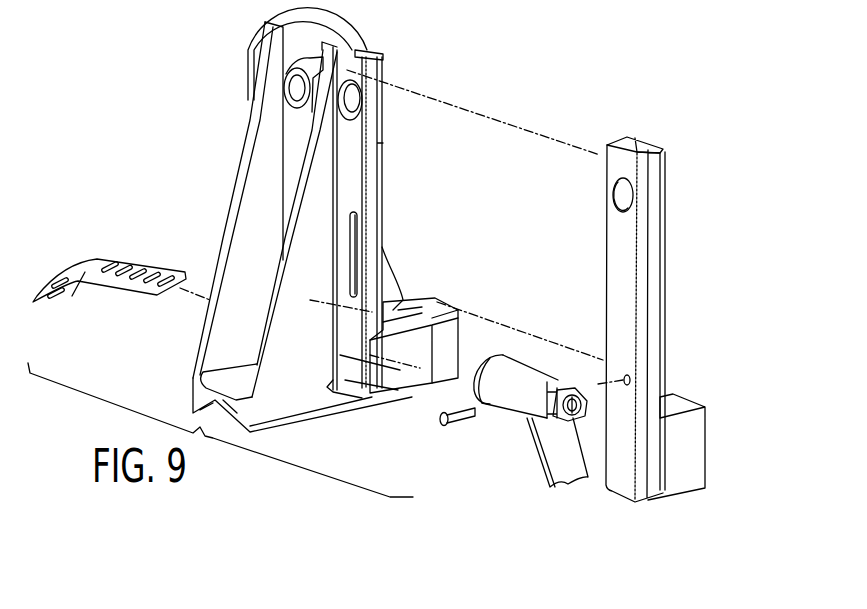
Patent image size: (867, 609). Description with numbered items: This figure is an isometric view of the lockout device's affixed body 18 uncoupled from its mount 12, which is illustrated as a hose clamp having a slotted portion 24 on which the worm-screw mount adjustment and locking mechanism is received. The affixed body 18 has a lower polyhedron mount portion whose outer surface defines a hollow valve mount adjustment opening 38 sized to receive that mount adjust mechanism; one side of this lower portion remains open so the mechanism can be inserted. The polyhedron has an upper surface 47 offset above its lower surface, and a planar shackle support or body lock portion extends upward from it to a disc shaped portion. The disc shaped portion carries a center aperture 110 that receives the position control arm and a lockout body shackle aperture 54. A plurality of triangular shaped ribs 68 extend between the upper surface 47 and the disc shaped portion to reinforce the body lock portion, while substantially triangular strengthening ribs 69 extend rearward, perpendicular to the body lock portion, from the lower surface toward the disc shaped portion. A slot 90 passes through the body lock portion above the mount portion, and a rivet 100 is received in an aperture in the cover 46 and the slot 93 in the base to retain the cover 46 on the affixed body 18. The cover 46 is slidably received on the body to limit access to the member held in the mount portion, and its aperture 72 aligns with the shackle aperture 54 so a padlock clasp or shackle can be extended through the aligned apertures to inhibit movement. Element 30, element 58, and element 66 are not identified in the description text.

The mount 12 is at (541, 462).
The affixed body 18 is at (224, 27).
The slotted portion 24 is at (132, 260).
The disc 30 is at (227, 50).
The valve mount adjustment opening 38 is at (400, 358).
The cover 46 is at (668, 285).
The upper surface 47 is at (398, 319).
The lockout body shackle aperture 54 is at (357, 103).
The foot 58 is at (690, 445).
The flange 66 is at (665, 167).
The triangular shaped ribs 68 is at (388, 268).
The strengthening ribs 69 is at (238, 173).
The aperture 72 is at (622, 192).
The slot 90 is at (630, 380).
The slot 93 is at (357, 223).
The rivet 100 is at (460, 420).
The center aperture 110 is at (286, 88).